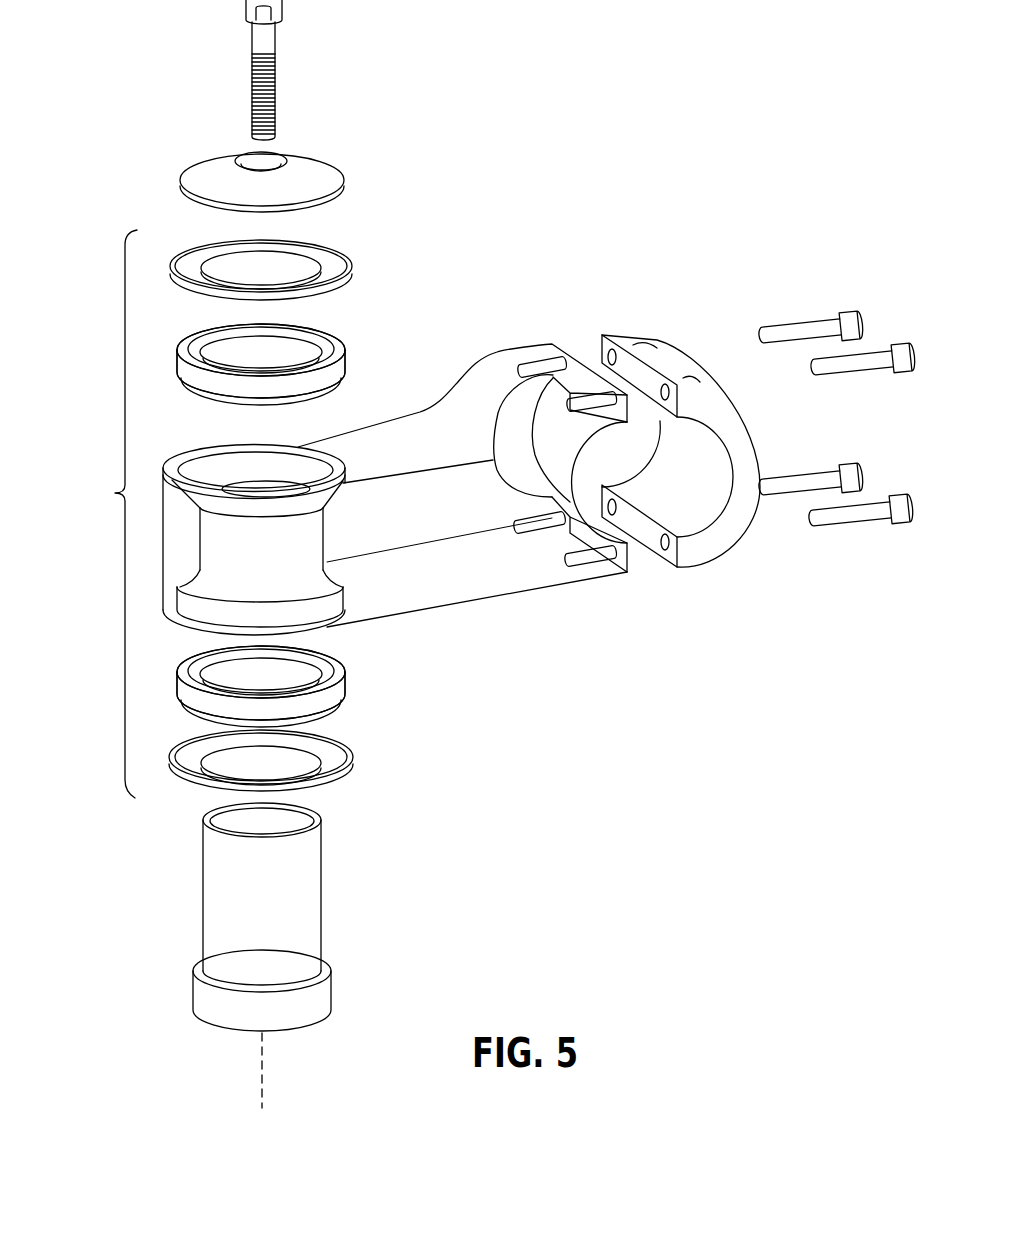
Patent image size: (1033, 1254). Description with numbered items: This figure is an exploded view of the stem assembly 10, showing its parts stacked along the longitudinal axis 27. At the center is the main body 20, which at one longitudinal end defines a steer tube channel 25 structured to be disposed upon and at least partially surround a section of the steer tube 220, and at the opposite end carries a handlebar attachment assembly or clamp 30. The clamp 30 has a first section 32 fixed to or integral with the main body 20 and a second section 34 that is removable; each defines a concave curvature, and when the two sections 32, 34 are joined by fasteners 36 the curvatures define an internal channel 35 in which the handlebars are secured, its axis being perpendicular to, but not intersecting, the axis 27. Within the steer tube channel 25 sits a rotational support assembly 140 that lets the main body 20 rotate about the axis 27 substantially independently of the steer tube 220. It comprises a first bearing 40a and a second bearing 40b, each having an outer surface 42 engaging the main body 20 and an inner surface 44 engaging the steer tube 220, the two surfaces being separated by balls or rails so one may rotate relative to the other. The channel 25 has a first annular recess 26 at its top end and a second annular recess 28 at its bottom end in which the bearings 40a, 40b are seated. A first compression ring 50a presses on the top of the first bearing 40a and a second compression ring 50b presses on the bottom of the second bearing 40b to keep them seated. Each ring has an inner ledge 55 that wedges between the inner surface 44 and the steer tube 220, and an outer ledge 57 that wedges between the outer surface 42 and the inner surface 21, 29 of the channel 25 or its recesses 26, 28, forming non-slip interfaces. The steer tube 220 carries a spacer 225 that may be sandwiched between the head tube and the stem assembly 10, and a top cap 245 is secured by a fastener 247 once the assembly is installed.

The stem assembly 10 is at (112, 514).
The main body 20 is at (384, 460).
The inner surface 21 is at (322, 460).
The steer tube channel 25 is at (225, 473).
The first annular recess 26 is at (288, 473).
The axis 27 is at (265, 1063).
The second annular recess 28 is at (320, 600).
The inner surface 29 is at (282, 622).
The handlebar attachment assembly 30 is at (572, 297).
The first section 32 is at (535, 353).
The second section 34 is at (717, 399).
The internal channel 35 is at (705, 512).
The fasteners 36 is at (847, 320).
The first bearing 40a is at (178, 330).
The second bearing 40b is at (168, 677).
The outer surface 42 is at (335, 370).
The inner surface 44 is at (270, 353).
The first compression ring 50a is at (332, 257).
The second compression ring 50b is at (345, 777).
The inner ledge 55 is at (272, 258).
The outer ledge 57 is at (343, 285).
The rotational support assembly 140 is at (106, 514).
The steer tube 220 is at (305, 893).
The spacer 225 is at (322, 997).
The top cap 245 is at (317, 172).
The fastener 247 is at (268, 35).